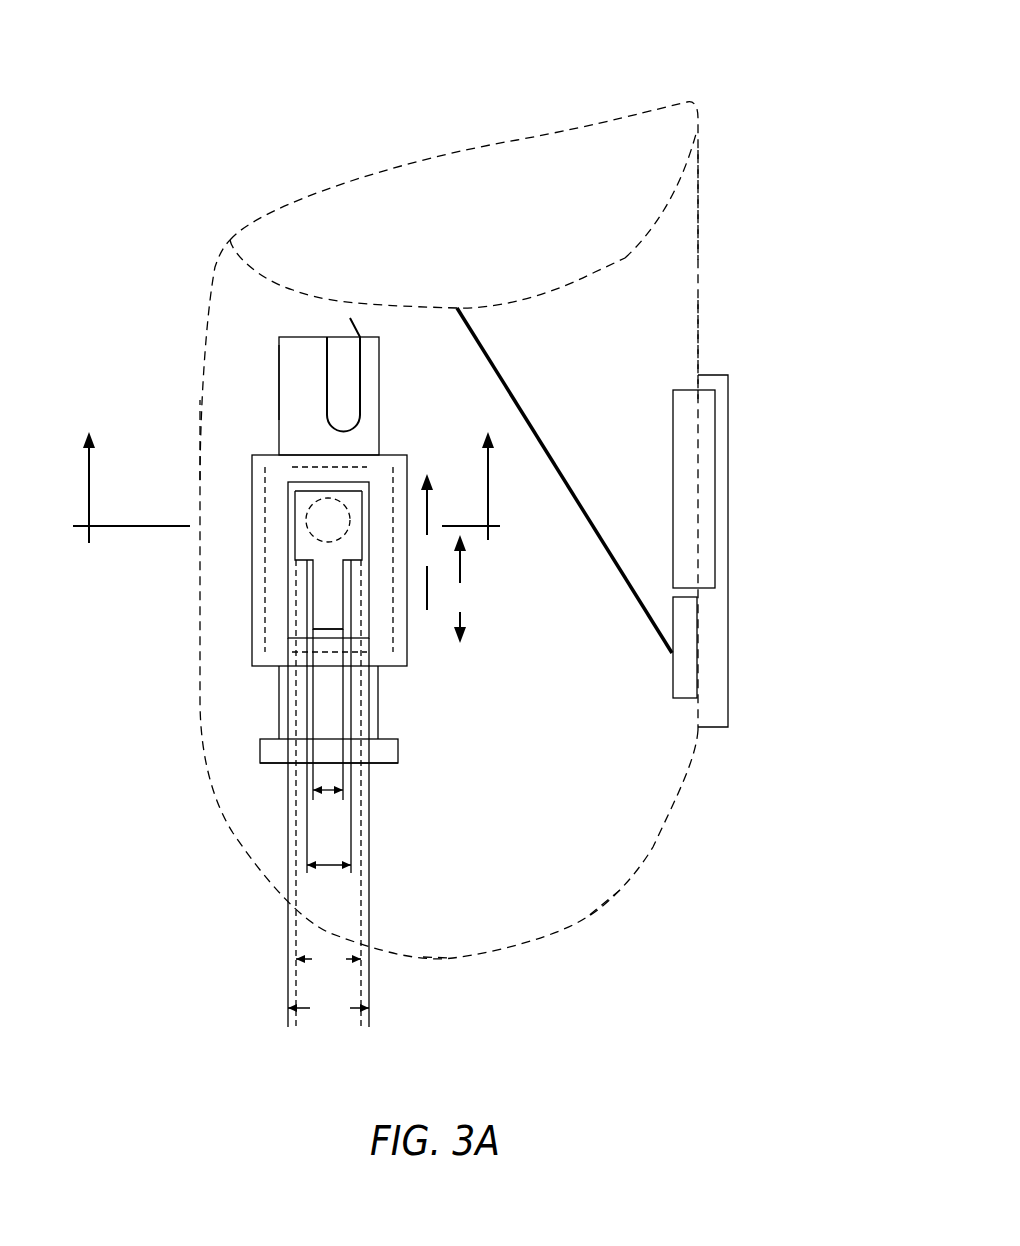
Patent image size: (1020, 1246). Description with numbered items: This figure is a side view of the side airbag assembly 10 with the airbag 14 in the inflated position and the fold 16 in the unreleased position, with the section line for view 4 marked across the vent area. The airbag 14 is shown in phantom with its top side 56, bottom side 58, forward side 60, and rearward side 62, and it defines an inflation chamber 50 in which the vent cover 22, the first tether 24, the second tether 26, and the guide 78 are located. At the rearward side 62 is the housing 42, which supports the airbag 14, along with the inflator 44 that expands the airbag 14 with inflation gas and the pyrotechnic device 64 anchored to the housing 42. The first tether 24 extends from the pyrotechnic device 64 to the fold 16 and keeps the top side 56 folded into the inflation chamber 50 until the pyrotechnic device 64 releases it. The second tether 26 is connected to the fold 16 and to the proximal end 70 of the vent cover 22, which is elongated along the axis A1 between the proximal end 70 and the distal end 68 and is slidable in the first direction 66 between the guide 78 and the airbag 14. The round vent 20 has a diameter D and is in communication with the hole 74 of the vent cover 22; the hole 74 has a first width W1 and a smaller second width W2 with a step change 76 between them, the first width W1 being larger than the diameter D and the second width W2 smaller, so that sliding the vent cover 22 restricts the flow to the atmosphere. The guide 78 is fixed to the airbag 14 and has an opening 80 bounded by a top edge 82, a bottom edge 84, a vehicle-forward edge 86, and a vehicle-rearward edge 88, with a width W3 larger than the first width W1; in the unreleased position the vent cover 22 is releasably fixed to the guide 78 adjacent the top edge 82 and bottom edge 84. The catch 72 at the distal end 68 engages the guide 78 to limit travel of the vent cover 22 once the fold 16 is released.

The side airbag assembly 10 is at (541, 64).
The airbag 14 is at (698, 207).
The fold 16 is at (625, 258).
The vent 20 is at (267, 450).
The vent cover 22 is at (279, 355).
The first tether 24 is at (512, 394).
The second tether 26 is at (350, 318).
The housing 42 is at (728, 545).
The inflator 44 is at (715, 458).
The inflation chamber 50 is at (543, 833).
The top side 56 is at (600, 275).
The bottom side 58 is at (450, 960).
The forward side 60 is at (201, 443).
The rearward side 62 is at (698, 350).
The pyrotechnic device 64 is at (697, 660).
The first direction 66 is at (427, 542).
The distal end 68 is at (277, 739).
The proximal end 70 is at (280, 337).
The catch 72 is at (280, 765).
The hole 74 is at (312, 593).
The step change 76 is at (312, 543).
The guide 78 is at (289, 484).
The opening 80 is at (288, 618).
The top edge 82 is at (308, 486).
The bottom edge 84 is at (325, 638).
The vehicle-forward edge 86 is at (287, 630).
The vehicle-rearward edge 88 is at (370, 597).
The section line 4 is at (289, 487).
The axis A1 is at (459, 589).
The first width W1 is at (328, 960).
The second width W2 is at (326, 796).
The width of the opening W3 is at (328, 1009).
The diameter D is at (327, 870).